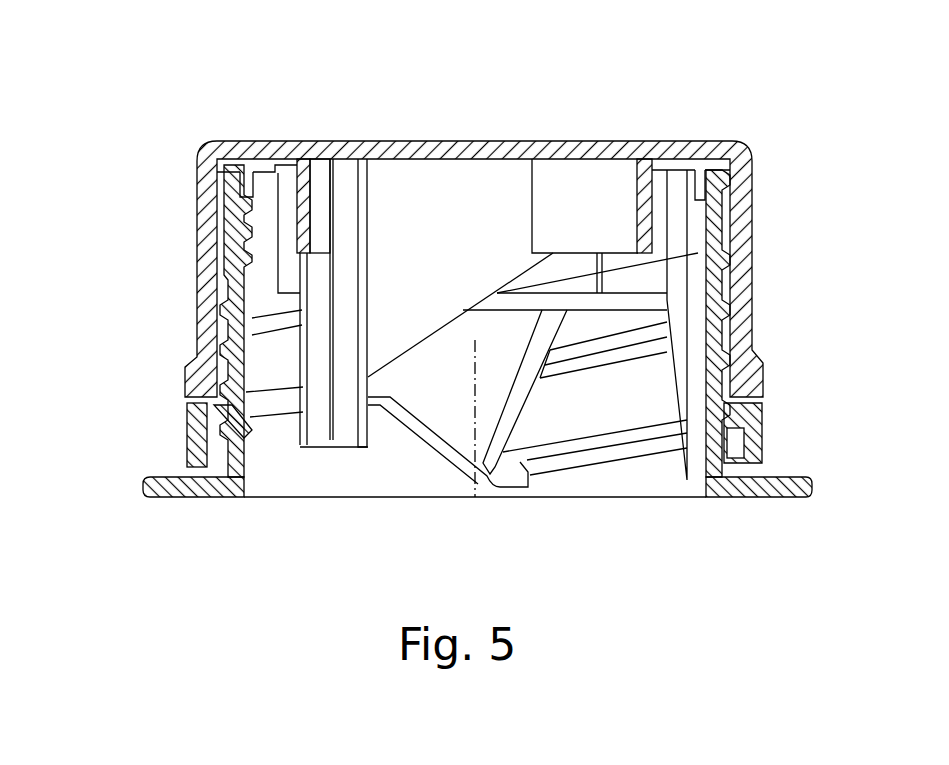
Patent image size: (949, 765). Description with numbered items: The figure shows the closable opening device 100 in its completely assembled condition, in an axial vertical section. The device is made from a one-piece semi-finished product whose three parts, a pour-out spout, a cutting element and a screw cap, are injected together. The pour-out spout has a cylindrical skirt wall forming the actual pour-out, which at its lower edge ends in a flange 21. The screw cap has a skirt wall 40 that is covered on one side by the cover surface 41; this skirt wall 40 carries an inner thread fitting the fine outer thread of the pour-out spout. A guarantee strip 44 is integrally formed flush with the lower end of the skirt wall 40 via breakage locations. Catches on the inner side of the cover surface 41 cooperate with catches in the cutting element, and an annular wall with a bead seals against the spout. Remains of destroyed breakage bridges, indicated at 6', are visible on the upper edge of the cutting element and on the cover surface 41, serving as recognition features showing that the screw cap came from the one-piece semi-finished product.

The closable opening device 100 is at (555, 229).
The cover surface 41 is at (488, 140).
The remains of breakage bridge attachment 6' is at (471, 131).
The skirt wall 40 is at (735, 258).
The guarantee strip 44 is at (752, 430).
The flange 21 is at (783, 488).